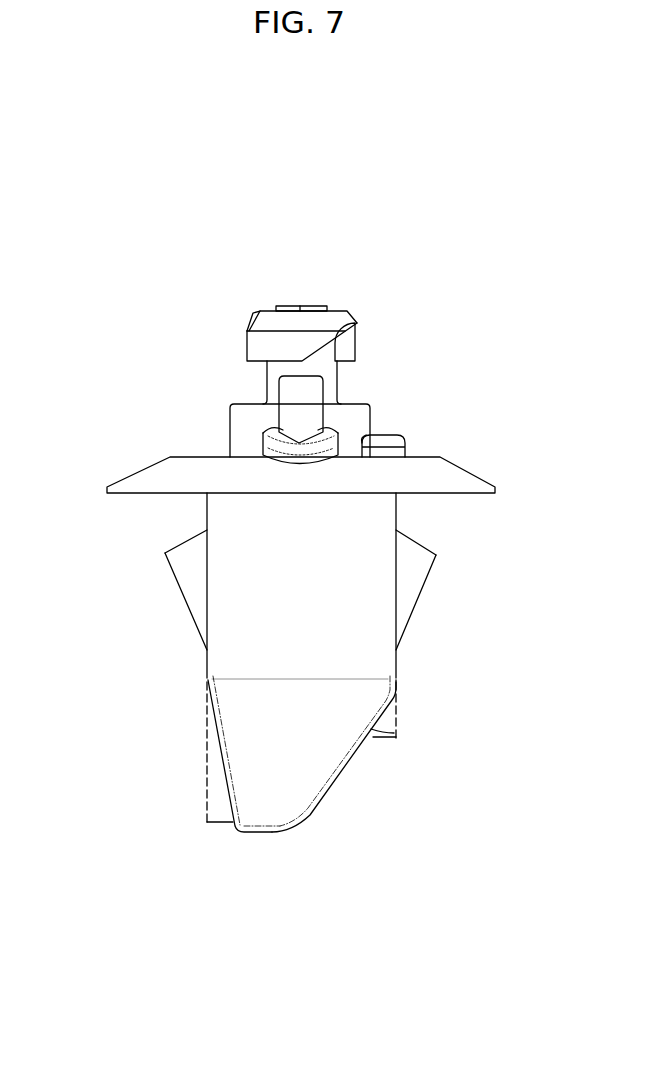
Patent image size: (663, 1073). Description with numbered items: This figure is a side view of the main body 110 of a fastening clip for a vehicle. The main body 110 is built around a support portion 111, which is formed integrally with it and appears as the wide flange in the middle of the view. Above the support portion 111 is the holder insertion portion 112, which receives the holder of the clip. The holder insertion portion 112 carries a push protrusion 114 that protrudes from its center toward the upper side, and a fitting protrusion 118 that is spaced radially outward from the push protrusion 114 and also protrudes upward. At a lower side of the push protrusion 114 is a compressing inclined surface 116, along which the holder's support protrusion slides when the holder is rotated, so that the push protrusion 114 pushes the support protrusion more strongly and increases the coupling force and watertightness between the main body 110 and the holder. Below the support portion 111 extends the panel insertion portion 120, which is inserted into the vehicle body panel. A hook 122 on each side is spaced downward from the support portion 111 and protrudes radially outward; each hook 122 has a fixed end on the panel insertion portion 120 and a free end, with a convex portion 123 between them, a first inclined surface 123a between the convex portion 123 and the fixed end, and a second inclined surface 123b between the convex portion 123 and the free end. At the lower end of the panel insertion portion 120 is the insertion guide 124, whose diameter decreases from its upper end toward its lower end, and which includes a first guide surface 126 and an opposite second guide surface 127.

The main body 110 is at (303, 152).
The support portion 111 is at (457, 475).
The holder insertion portion 112 is at (236, 354).
The push protrusion 114 is at (338, 322).
The compressing inclined surface 116 is at (337, 340).
The fitting protrusion 118 is at (288, 420).
The panel insertion portion 120 is at (140, 654).
The hook 122 is at (160, 583).
The convex portion 123 is at (180, 553).
The first inclined surface 123a is at (187, 610).
The second inclined surface 123b is at (187, 535).
The insertion guide 124 is at (282, 848).
The first guide surface 126 is at (335, 783).
The second guide surface 127 is at (220, 758).